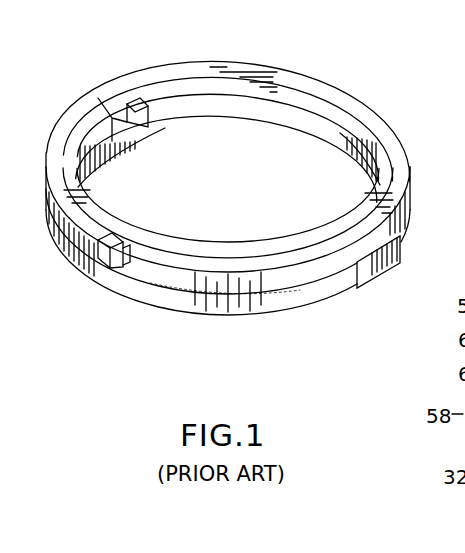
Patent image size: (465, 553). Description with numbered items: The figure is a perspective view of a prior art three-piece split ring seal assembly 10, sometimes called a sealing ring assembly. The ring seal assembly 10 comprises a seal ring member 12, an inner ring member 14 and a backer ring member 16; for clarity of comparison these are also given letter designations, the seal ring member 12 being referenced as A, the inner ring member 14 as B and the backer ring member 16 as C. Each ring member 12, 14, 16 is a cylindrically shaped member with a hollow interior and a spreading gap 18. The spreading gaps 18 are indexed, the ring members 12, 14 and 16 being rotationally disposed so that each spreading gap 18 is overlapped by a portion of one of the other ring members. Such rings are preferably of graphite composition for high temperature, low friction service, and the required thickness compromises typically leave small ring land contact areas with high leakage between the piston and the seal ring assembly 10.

The ring seal assembly 10 is at (233, 52).
The seal ring member 12 is at (393, 124).
The inner ring member 14 is at (182, 241).
The backer ring member 16 is at (170, 301).
The spreading gap 18 is at (137, 100).
The seal ring member letter designation A is at (307, 78).
The inner ring member letter designation B is at (150, 231).
The backer ring member letter designation C is at (125, 301).